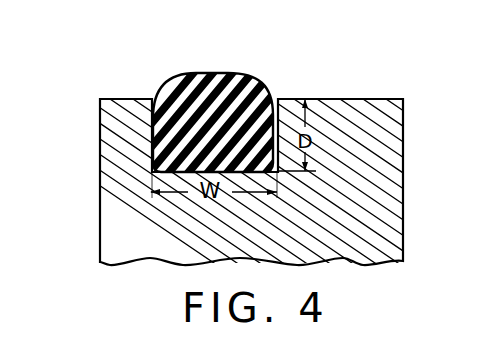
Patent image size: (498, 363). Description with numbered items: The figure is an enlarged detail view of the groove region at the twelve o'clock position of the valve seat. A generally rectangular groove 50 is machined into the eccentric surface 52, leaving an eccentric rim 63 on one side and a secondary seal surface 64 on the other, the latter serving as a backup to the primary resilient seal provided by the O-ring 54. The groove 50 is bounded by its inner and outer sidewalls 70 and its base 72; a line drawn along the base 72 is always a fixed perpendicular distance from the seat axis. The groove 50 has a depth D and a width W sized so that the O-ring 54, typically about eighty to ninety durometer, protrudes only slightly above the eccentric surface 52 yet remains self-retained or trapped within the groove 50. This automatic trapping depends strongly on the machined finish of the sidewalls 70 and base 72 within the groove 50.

The groove 50 is at (277, 98).
The eccentric surface 52 is at (328, 95).
The O-ring 54 is at (225, 73).
The eccentric rim 63 is at (123, 99).
The secondary seal surface 64 is at (392, 99).
The groove inner and outer sidewalls 70 is at (153, 160).
The groove base 72 is at (152, 169).